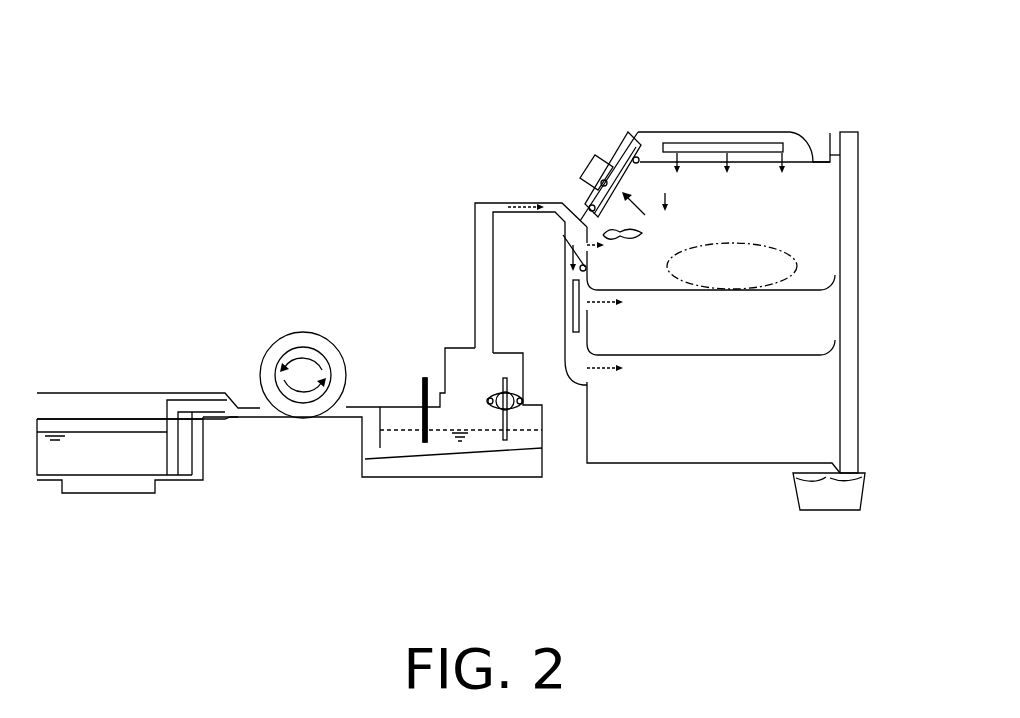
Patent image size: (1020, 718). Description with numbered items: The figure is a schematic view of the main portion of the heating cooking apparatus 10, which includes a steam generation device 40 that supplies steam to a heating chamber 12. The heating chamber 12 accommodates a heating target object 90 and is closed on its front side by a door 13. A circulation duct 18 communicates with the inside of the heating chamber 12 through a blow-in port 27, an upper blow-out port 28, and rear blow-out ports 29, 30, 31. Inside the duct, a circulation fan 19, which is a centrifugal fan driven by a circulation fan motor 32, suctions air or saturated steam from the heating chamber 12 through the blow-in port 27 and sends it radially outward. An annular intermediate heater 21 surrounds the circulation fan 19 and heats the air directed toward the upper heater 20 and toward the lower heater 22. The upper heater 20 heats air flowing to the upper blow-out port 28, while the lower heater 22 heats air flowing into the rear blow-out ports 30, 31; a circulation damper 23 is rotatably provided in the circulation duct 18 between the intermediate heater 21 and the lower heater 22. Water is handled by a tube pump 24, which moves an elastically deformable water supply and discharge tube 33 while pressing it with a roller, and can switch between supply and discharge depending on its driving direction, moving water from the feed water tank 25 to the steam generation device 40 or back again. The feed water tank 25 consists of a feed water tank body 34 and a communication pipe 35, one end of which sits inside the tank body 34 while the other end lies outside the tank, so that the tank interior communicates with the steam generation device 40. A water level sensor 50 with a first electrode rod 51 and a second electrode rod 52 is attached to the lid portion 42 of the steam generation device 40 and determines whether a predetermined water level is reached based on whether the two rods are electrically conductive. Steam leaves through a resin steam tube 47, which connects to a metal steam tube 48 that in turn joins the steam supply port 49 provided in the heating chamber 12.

The heating cooking apparatus 10 is at (826, 92).
The heating chamber 12 is at (716, 468).
The door 13 is at (848, 154).
The circulation duct 18 is at (673, 132).
The circulation fan 19 is at (602, 158).
The upper heater 20 is at (688, 146).
The intermediate heater 21 is at (638, 141).
The lower heater 22 is at (573, 302).
The circulation damper 23 is at (563, 255).
The tube pump 24 is at (300, 326).
The feed water tank 25 is at (78, 414).
The blow-in port 27 is at (632, 186).
The upper blow-out port 28 is at (727, 158).
The rear blow-out port 29 is at (587, 252).
The rear blow-out port 30 is at (587, 308).
The rear blow-out port 31 is at (587, 374).
The circulation fan motor 32 is at (584, 164).
The water supply and discharge tube 33 is at (338, 412).
The feed water tank body 34 is at (128, 419).
The communication pipe 35 is at (200, 407).
The steam generation device 40 is at (452, 483).
The lid portion 42 is at (525, 372).
The steam tube 47 is at (482, 202).
The steam tube 48 is at (570, 200).
The steam supply port 49 is at (585, 236).
The water level sensor 50 is at (420, 385).
The first electrode rod 51 is at (425, 410).
The second electrode rod 52 is at (522, 392).
The heating target object 90 is at (797, 248).